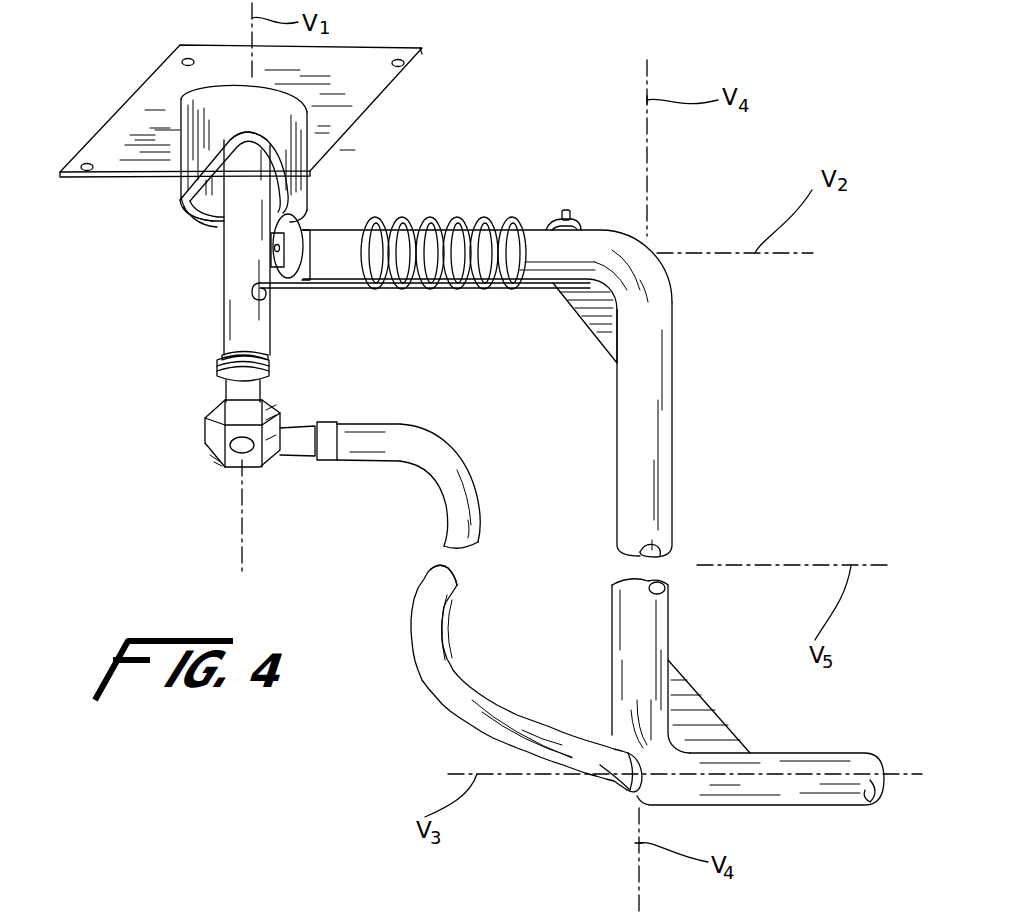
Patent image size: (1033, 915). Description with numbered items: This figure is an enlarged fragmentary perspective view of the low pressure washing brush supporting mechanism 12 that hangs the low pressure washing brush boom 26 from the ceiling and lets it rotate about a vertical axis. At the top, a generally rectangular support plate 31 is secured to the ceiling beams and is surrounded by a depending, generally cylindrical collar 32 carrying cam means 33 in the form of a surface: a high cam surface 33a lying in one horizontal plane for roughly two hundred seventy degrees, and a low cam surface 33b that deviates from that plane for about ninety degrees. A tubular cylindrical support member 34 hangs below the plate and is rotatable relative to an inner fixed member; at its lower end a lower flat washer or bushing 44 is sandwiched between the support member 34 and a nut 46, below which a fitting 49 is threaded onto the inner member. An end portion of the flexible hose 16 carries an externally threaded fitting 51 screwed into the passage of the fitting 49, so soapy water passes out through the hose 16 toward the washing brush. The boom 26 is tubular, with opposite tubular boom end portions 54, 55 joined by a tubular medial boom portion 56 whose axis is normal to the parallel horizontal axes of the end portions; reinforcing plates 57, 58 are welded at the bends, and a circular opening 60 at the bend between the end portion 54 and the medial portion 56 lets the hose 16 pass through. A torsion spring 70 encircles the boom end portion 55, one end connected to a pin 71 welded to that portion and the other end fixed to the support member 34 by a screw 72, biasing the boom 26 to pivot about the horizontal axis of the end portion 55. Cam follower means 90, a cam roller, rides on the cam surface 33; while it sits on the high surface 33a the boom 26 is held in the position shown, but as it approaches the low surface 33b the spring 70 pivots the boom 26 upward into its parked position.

The low pressure washing brush supporting mechanism 12 is at (462, 68).
The flexible hose 16 is at (410, 681).
The low pressure washing brush boom 26 is at (772, 532).
The support plate 31 is at (153, 95).
The collar 32 is at (300, 117).
The cam means 33 is at (180, 206).
The cam surface 33a is at (204, 217).
The cam surface 33b is at (227, 140).
The tubular cylindrical support member 34 is at (228, 338).
The lower flat washer or bushing 44 is at (220, 365).
The nut 46 is at (268, 380).
The fitting 49 is at (270, 465).
The externally threaded fitting 51 is at (300, 430).
The tubular boom end portion 54 is at (845, 760).
The tubular boom end portion 55 is at (350, 233).
The tubular medial boom portion 56 is at (615, 465).
The reinforcing plate 57 is at (597, 330).
The reinforcing plate 58 is at (708, 720).
The circular opening 60 is at (610, 745).
The torsion spring 70 is at (434, 210).
The pin 71 is at (565, 214).
The screw 72 is at (266, 294).
The cam follower means 90 is at (310, 206).